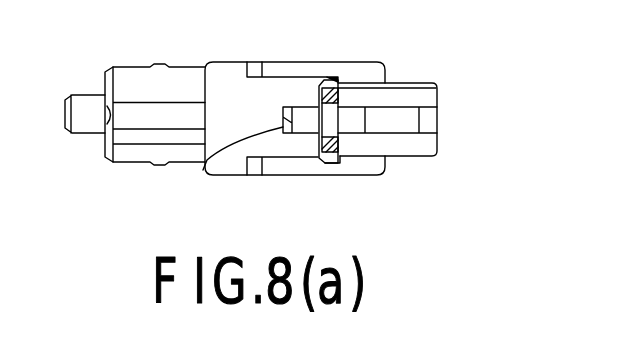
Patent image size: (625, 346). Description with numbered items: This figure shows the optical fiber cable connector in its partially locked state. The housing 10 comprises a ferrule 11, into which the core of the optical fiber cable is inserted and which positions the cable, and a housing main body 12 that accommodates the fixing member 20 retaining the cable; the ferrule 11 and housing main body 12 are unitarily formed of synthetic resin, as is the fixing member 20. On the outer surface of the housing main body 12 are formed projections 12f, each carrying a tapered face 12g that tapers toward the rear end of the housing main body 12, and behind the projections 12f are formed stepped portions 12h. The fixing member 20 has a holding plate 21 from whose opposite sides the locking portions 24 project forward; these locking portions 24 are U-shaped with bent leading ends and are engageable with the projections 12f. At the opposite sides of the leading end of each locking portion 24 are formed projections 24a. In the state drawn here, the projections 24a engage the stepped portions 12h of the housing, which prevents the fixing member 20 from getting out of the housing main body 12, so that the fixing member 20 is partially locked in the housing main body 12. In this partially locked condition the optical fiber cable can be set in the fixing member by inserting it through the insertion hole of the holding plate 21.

The housing 10 is at (128, 67).
The ferrule 11 is at (82, 127).
The housing main body 12 is at (223, 68).
The projection 12f is at (203, 170).
The tapered face 12g is at (303, 118).
The stepped portion 12h is at (323, 78).
The fixing member 20 is at (431, 85).
The holding plate 21 is at (429, 124).
The locking portion 24 is at (413, 143).
The projection 24a is at (329, 163).